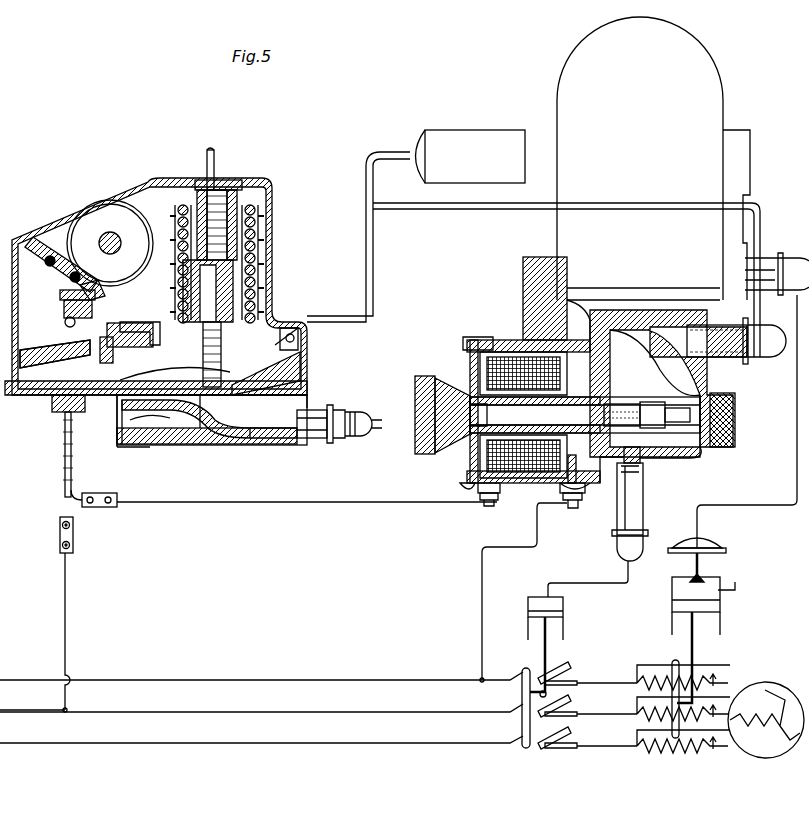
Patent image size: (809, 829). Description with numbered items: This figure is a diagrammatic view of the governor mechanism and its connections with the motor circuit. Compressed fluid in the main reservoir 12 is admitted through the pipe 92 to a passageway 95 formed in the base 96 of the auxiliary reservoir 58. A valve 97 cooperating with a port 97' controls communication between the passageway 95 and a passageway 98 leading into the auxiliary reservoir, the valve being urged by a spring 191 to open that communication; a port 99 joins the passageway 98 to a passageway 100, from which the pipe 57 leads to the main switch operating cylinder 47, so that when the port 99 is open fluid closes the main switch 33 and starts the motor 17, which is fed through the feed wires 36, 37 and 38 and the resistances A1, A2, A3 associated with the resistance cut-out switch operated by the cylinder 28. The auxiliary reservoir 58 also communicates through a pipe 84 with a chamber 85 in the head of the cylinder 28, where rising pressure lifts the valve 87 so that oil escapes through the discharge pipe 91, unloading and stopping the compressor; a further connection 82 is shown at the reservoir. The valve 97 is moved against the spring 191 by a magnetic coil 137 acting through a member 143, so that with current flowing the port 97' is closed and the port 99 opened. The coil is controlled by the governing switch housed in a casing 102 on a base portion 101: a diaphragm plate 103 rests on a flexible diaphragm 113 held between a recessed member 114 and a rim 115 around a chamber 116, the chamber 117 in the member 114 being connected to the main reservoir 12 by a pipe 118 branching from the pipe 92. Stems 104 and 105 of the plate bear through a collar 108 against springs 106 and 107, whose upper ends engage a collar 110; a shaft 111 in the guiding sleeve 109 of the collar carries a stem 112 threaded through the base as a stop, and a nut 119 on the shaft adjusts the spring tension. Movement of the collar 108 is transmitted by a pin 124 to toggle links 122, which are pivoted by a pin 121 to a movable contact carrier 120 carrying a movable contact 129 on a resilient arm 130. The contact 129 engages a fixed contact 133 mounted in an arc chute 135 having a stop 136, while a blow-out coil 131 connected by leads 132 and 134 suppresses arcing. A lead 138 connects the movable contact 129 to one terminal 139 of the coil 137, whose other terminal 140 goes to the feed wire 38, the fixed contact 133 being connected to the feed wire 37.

The main reservoir 12 is at (478, 130).
The lamp 17 is at (770, 684).
The switch cylinder 28 is at (712, 604).
The main switch 33 is at (548, 690).
The main feed wire 36 is at (273, 741).
The third feed wire 37 is at (273, 710).
The main feed wire 38 is at (273, 679).
The cylinder 47 is at (528, 605).
The pipe 57 is at (646, 518).
The auxiliary reservoir 58 is at (653, 158).
The pipe 82 is at (797, 262).
The pipe 84 is at (795, 482).
The chamber 85 is at (722, 541).
The valve 87 is at (705, 579).
The discharge pipe 91 is at (736, 588).
The pipe 92 is at (372, 162).
The passageway 95 is at (662, 381).
The base 96 is at (532, 320).
The valve 97 is at (733, 422).
The port 97' is at (687, 412).
The passageway 98 is at (525, 297).
The port 99 is at (655, 450).
The passageway 100 is at (610, 483).
The base portion 101 is at (300, 400).
The casing 102 is at (277, 266).
The diaphragm plate 103 is at (118, 450).
The stem 104 is at (208, 445).
The stem 105 is at (305, 378).
The spring 106 is at (240, 233).
The spring 107 is at (248, 252).
The collar 108 is at (258, 312).
The guiding sleeve 109 is at (258, 320).
The collar 110 is at (45, 215).
The shaft 111 is at (232, 202).
The stem 112 is at (250, 447).
The flexible diaphragm 113 is at (160, 442).
The recessed member 114 is at (178, 445).
The rim 115 is at (107, 408).
The chamber 116 is at (270, 450).
The chamber 117 is at (221, 443).
The pipe 118 is at (338, 443).
The nut 119 is at (30, 240).
The movable contact carrier 120 is at (130, 322).
The pin 121 is at (150, 378).
The toggle link 122 is at (296, 333).
The pin 124 is at (40, 200).
The movable switch contact 129 is at (232, 205).
The resilient arm 130 is at (66, 341).
The blow-out coil 131 is at (108, 212).
The lead 132 is at (100, 288).
The fixed switch contact 133 is at (62, 296).
The lead 134 is at (113, 240).
The arc chute 135 is at (60, 268).
The stop 136 is at (52, 396).
The magnetic coil 137 is at (505, 360).
The lead 138 is at (280, 504).
The terminal 139 is at (497, 504).
The terminal 140 is at (572, 510).
The member 143 is at (650, 456).
The spring 191 is at (715, 448).
The resistor A1 is at (612, 745).
The resistor A2 is at (612, 713).
The resistor A3 is at (612, 682).